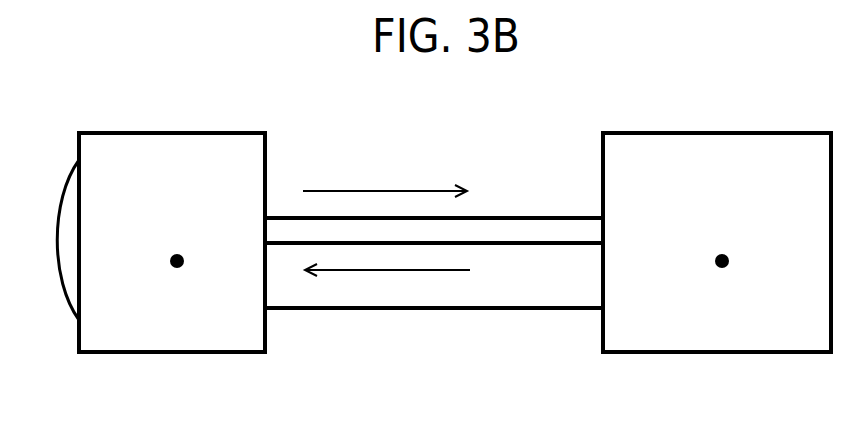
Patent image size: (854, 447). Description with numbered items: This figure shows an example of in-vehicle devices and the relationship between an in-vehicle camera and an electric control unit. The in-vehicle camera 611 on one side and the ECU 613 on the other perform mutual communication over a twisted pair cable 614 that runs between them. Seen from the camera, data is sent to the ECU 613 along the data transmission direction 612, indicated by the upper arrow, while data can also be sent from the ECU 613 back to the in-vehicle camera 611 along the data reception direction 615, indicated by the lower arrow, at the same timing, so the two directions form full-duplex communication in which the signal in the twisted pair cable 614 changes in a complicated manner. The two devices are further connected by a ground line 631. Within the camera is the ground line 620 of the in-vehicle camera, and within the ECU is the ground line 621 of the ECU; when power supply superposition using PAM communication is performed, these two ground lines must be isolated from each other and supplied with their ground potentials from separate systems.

The in-vehicle camera 611 is at (198, 133).
The data transmission direction 612 is at (386, 189).
The ECU 613 is at (745, 133).
The twisted pair cable 614 is at (567, 218).
The data reception direction 615 is at (390, 272).
The ground line of the in-vehicle camera 620 is at (177, 268).
The ground line of the ECU 621 is at (722, 268).
The ground line 631 is at (293, 310).